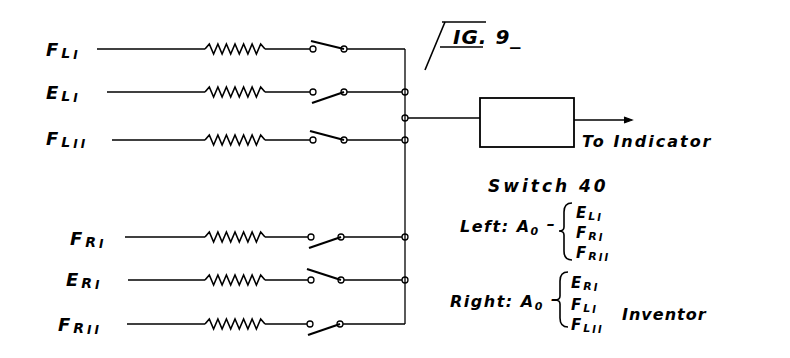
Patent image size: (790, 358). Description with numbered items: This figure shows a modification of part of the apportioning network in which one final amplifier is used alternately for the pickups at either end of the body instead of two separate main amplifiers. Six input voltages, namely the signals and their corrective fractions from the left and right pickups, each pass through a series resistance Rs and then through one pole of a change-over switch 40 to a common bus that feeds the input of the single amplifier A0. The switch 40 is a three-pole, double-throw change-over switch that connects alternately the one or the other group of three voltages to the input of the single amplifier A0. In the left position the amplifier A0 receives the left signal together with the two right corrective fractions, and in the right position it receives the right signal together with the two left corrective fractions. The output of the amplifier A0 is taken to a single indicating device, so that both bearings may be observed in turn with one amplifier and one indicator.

The change-over switch 40 is at (336, 146).
The single amplifier A0 is at (527, 122).
The series resistor Rs is at (235, 197).